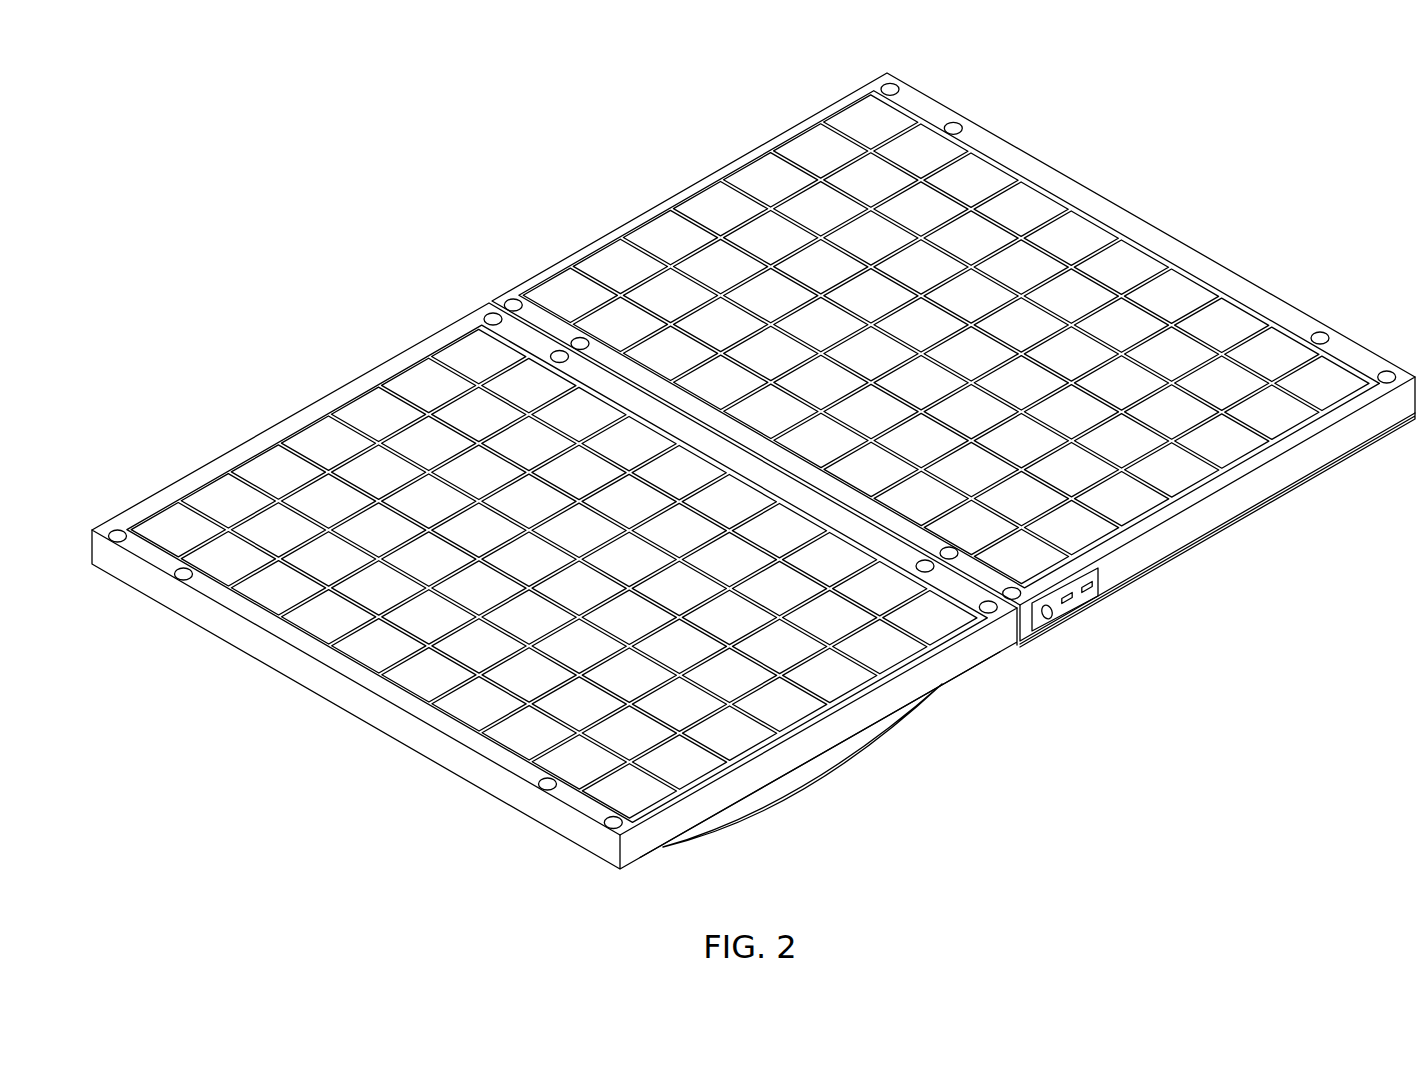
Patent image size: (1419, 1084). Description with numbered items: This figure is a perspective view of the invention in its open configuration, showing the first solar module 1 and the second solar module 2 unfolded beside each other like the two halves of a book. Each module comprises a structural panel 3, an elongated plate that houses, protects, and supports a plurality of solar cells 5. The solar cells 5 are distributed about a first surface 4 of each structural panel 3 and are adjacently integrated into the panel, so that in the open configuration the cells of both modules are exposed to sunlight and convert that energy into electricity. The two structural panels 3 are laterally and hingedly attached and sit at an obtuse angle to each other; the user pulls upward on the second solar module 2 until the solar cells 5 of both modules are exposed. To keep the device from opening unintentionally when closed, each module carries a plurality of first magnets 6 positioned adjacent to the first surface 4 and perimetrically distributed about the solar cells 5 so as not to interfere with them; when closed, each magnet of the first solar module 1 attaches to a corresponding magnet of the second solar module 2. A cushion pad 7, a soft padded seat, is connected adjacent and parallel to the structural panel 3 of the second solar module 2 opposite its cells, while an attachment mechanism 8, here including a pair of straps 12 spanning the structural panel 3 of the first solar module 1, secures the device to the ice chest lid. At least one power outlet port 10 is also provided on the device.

The first solar module 1 is at (194, 644).
The second solar module 2 is at (1164, 169).
The structural panel 3 is at (992, 649).
The first surface 4 is at (1198, 258).
The plurality of solar cells 5 is at (813, 156).
The plurality of first magnets 6 is at (887, 84).
The cushion pad 7 is at (1300, 481).
The attachment mechanism 8 is at (866, 835).
The at least one power outlet port 10 is at (1078, 612).
The pair of straps 12 is at (836, 762).